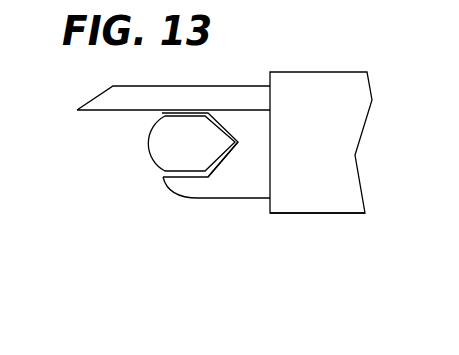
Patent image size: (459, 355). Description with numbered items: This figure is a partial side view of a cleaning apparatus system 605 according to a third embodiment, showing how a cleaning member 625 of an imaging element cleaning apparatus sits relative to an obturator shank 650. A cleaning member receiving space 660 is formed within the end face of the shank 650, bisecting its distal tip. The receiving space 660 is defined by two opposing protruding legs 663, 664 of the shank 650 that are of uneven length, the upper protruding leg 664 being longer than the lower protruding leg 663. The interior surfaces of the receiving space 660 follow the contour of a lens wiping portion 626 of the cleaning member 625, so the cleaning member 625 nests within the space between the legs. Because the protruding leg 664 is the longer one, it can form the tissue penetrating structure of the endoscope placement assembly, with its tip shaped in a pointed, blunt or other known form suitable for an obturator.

The fastening assembly 605 is at (337, 216).
The shank 650 is at (253, 92).
The cleaning member receiving space 660 is at (188, 113).
The cleaning member 625 is at (167, 142).
The protruding leg 663 is at (195, 188).
The protruding leg 664 is at (105, 103).
The lens wiping portion 626 is at (220, 143).